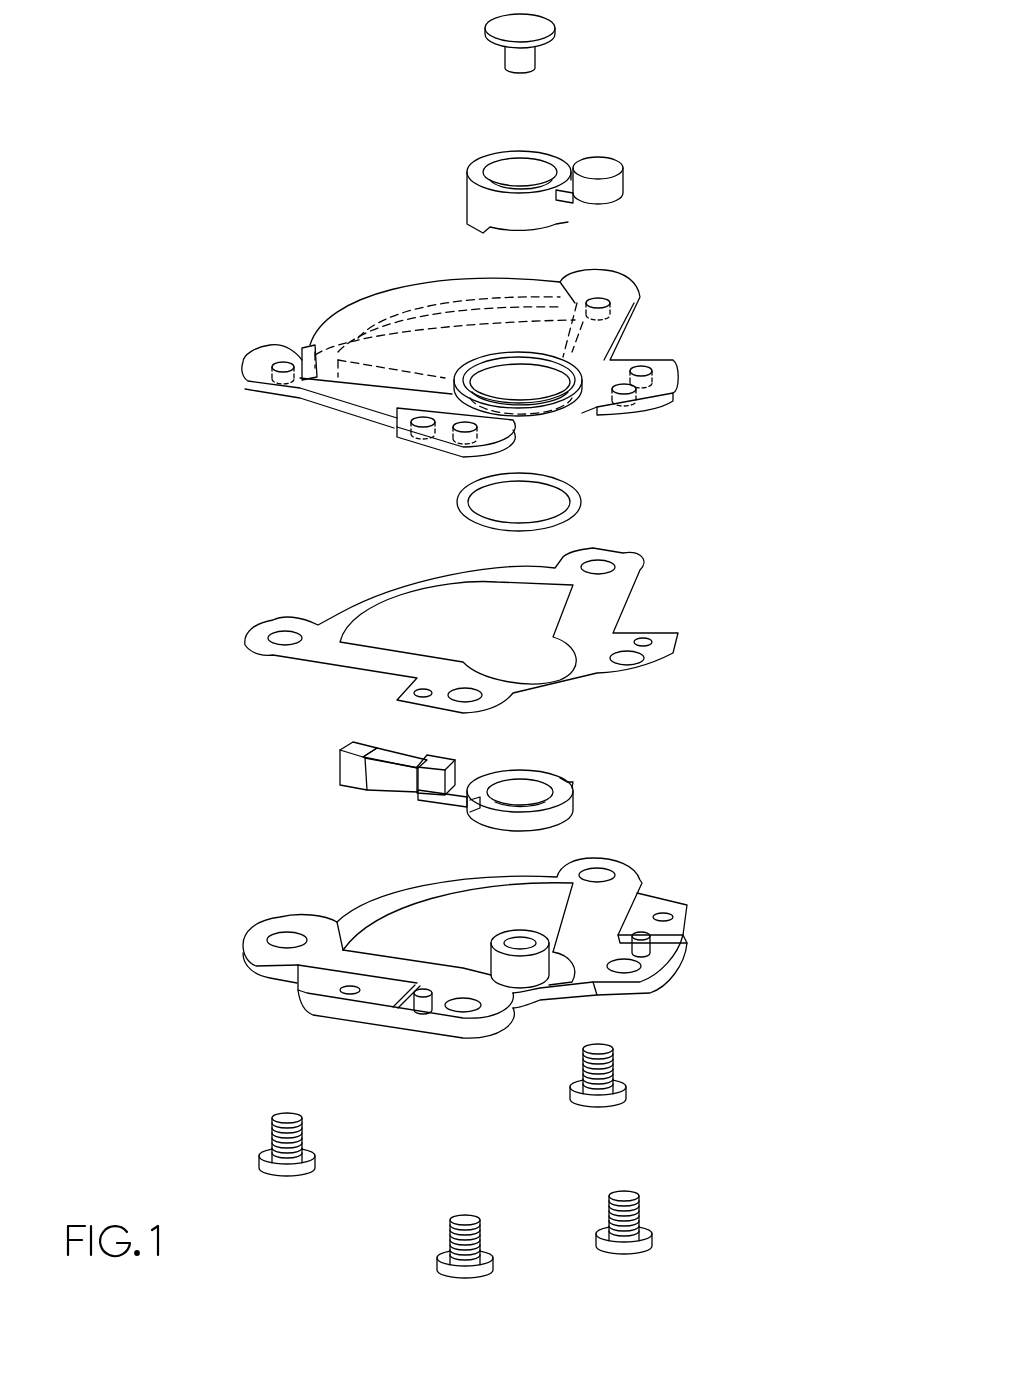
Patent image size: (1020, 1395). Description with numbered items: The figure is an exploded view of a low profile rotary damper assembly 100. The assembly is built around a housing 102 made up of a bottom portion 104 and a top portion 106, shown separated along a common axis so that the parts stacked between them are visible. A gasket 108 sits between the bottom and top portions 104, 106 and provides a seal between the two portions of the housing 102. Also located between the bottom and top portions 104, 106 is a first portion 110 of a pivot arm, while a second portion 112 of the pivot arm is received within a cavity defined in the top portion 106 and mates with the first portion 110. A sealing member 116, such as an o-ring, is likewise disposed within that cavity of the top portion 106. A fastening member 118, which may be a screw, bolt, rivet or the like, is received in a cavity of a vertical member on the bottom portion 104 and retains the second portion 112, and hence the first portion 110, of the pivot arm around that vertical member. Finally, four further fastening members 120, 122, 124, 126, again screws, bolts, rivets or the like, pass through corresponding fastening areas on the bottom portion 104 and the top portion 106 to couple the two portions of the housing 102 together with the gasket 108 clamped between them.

The rotary damper assembly 100 is at (858, 63).
The housing 102 is at (226, 272).
The bottom portion 104 is at (675, 963).
The top portion 106 is at (638, 320).
The gasket 108 is at (672, 648).
The first portion of the pivot arm 110 is at (574, 802).
The second portion of the pivot arm 112 is at (555, 218).
The sealing member 116 is at (582, 497).
The fastening member 118 is at (556, 35).
The fastening member 120 is at (287, 1178).
The fastening member 122 is at (627, 1097).
The fastening member 124 is at (438, 1264).
The fastening member 126 is at (653, 1241).